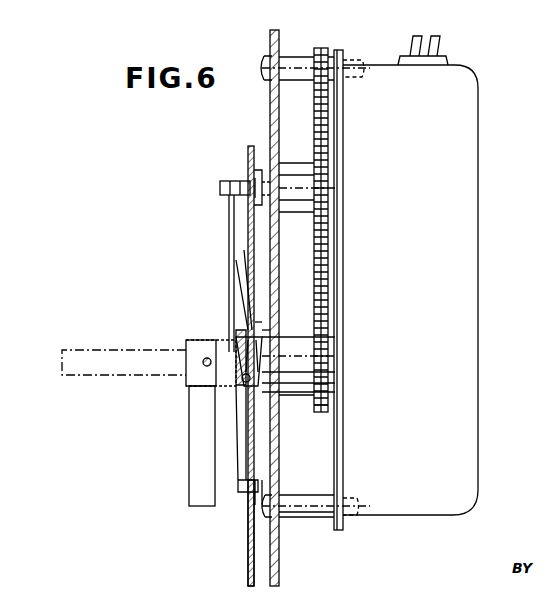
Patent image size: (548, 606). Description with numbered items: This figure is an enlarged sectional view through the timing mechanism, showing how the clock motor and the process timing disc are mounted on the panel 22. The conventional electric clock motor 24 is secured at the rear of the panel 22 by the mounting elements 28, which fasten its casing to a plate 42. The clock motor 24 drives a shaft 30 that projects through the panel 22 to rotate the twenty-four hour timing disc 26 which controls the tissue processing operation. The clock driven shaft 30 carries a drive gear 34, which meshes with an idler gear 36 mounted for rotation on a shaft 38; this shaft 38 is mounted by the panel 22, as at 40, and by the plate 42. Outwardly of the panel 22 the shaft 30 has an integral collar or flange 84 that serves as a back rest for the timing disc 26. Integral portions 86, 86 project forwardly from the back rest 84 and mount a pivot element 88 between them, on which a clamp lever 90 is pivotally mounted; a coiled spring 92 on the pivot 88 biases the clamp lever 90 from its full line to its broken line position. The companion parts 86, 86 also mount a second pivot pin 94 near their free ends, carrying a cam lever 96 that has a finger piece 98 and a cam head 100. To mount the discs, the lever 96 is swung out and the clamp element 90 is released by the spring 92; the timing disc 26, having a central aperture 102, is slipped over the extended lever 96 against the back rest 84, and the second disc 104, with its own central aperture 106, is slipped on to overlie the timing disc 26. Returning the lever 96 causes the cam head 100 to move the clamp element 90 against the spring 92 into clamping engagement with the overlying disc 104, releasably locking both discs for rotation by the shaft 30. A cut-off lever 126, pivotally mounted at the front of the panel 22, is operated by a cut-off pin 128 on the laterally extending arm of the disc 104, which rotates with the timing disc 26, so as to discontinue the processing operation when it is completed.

The panel 22 is at (269, 47).
The electric clock motor 24 is at (463, 250).
The timing disc 26 is at (247, 557).
The mounting elements 28 is at (316, 518).
The shaft 30 is at (292, 396).
The drive gear 34 is at (323, 410).
The idler gear 36 is at (319, 50).
The shaft 38 is at (292, 186).
The shaft mounting on panel 40 is at (251, 152).
The plate 42 is at (339, 52).
The collar or flange 84 is at (258, 506).
The integral portions 86 is at (195, 338).
The pivot element 88 is at (235, 392).
The clamp lever 90 is at (233, 332).
The coiled spring 92 is at (268, 362).
The second pivot pin 94 is at (200, 350).
The cam lever 96 is at (130, 372).
The finger piece 98 is at (189, 462).
The cam head 100 is at (208, 358).
The central aperture 102 is at (262, 332).
The second disc 104 is at (243, 494).
The central aperture 106 is at (258, 322).
The cut-off lever 126 is at (230, 243).
The cut-off pin 128 is at (222, 188).